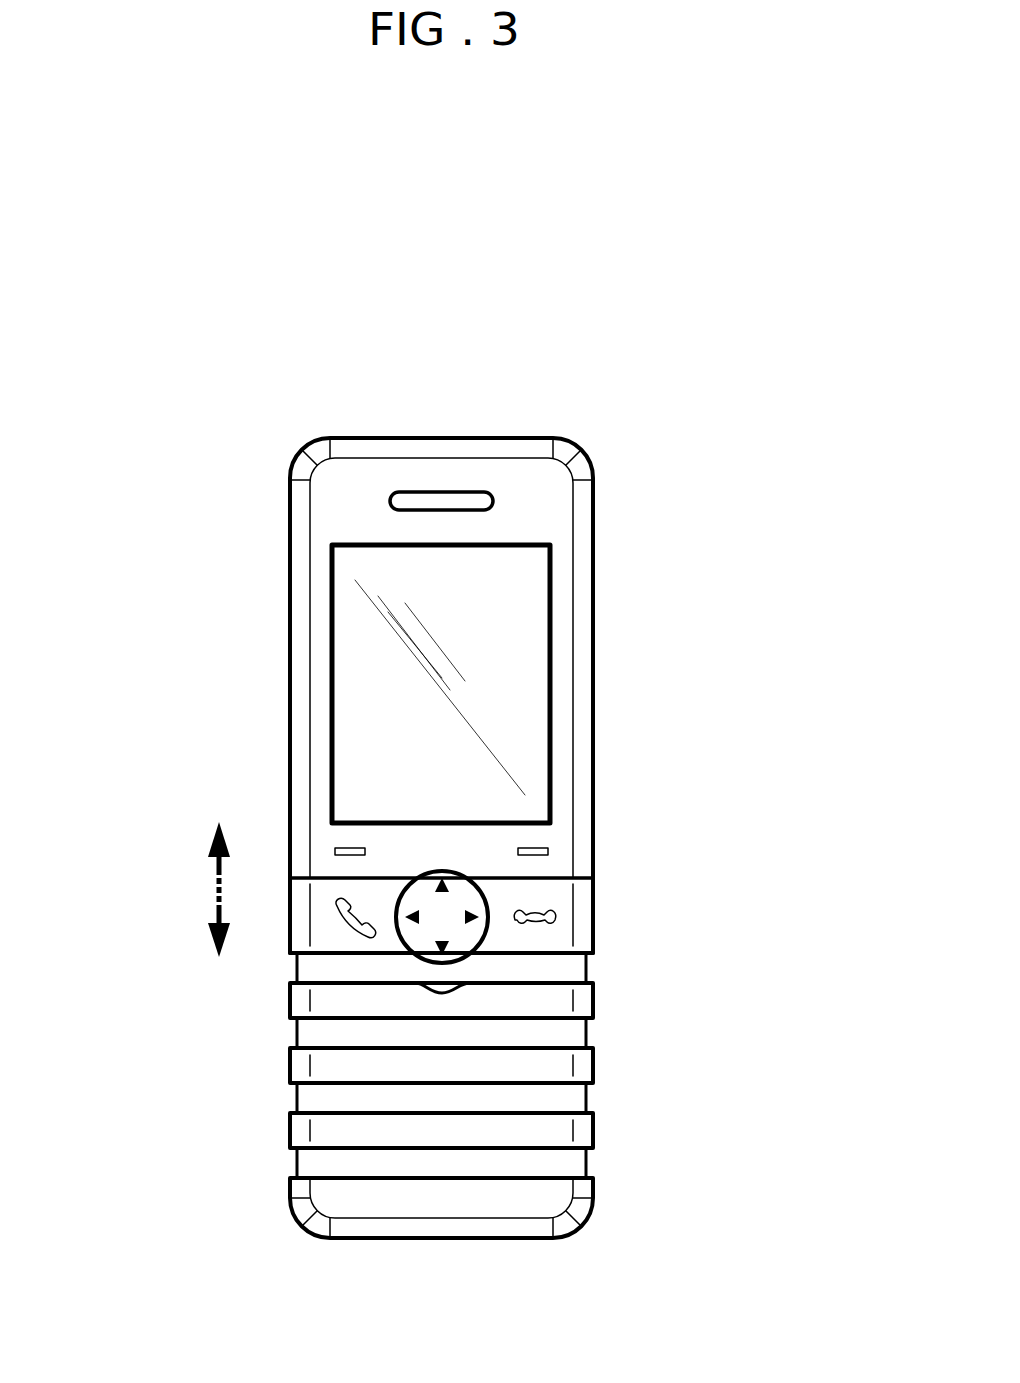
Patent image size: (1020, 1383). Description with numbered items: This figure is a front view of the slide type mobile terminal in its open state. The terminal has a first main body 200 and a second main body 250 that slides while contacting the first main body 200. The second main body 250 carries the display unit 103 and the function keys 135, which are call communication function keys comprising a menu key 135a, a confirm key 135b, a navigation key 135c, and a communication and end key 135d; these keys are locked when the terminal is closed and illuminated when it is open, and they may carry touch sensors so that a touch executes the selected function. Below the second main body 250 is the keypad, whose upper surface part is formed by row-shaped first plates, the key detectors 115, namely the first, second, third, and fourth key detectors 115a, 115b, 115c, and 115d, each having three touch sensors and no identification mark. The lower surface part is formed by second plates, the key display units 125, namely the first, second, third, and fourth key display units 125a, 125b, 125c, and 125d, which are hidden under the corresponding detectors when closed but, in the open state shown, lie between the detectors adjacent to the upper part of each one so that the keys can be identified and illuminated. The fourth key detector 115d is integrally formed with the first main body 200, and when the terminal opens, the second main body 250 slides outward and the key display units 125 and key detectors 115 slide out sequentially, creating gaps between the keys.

The first main body 200 is at (296, 1236).
The second main body 250 is at (602, 505).
The display unit 103 is at (536, 587).
The function keys 135 is at (737, 757).
The menu key 135a is at (366, 851).
The confirm key 135b is at (548, 851).
The navigation key 135c is at (470, 899).
The communication and end key 135d is at (583, 903).
The key display units 125 is at (737, 965).
The first key display unit 125a is at (584, 974).
The second key display unit 125b is at (584, 1041).
The third key display unit 125c is at (584, 1107).
The fourth key display unit 125d is at (584, 1171).
The key detectors 115 is at (143, 1205).
The first key detector 115a is at (303, 1004).
The second key detector 115b is at (303, 1071).
The third key detector 115c is at (303, 1138).
The fourth key detector 115d is at (303, 1203).